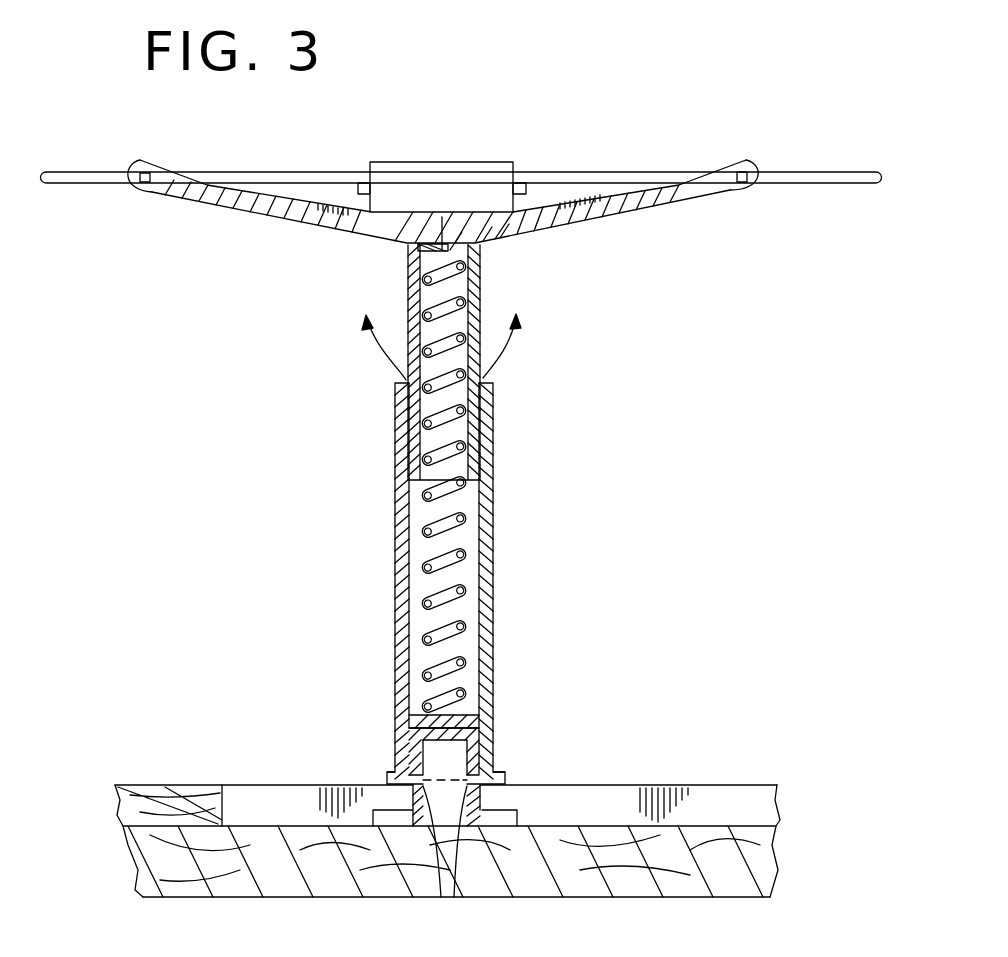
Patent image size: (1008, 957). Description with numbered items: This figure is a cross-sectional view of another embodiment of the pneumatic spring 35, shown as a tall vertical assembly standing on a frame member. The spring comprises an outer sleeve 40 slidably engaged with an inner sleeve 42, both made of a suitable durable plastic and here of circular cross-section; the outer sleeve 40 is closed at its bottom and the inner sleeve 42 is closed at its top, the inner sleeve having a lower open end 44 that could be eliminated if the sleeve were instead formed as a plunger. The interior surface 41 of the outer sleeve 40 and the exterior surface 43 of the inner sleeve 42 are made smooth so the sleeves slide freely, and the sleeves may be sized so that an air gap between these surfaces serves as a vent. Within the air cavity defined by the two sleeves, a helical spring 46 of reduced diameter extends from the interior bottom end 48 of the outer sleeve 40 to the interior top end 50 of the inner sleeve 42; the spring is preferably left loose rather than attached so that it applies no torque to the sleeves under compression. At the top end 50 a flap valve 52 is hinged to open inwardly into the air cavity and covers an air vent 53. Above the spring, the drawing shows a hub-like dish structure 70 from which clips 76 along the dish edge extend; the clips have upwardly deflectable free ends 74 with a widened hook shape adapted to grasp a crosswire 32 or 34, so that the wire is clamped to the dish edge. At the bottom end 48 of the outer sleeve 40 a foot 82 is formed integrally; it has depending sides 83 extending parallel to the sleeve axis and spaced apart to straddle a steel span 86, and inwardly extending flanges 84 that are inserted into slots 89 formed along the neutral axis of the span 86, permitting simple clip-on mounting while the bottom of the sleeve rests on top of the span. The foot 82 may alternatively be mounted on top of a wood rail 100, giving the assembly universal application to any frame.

The crosswire 32 is at (862, 172).
The crosswire 34 is at (140, 170).
The pneumatic spring 35 is at (500, 554).
The outer sleeve 40 is at (400, 622).
The interior surface 41 is at (402, 497).
The inner sleeve 42 is at (412, 300).
The exterior surface 43 is at (406, 372).
The open end 44 is at (485, 495).
The helical spring 46 is at (472, 390).
The interior bottom end 48 is at (455, 715).
The interior top end 50 is at (478, 284).
The flap valve 52 is at (442, 217).
The air vent 53 is at (462, 232).
The hub 70 is at (606, 208).
The free end 74 is at (752, 162).
The clip 76 is at (423, 172).
The foot 82 is at (487, 727).
The depending side 83 is at (410, 762).
The flange 84 is at (390, 785).
The steel span 86 is at (485, 808).
The slot 89 is at (441, 897).
The wood rail 100 is at (128, 800).